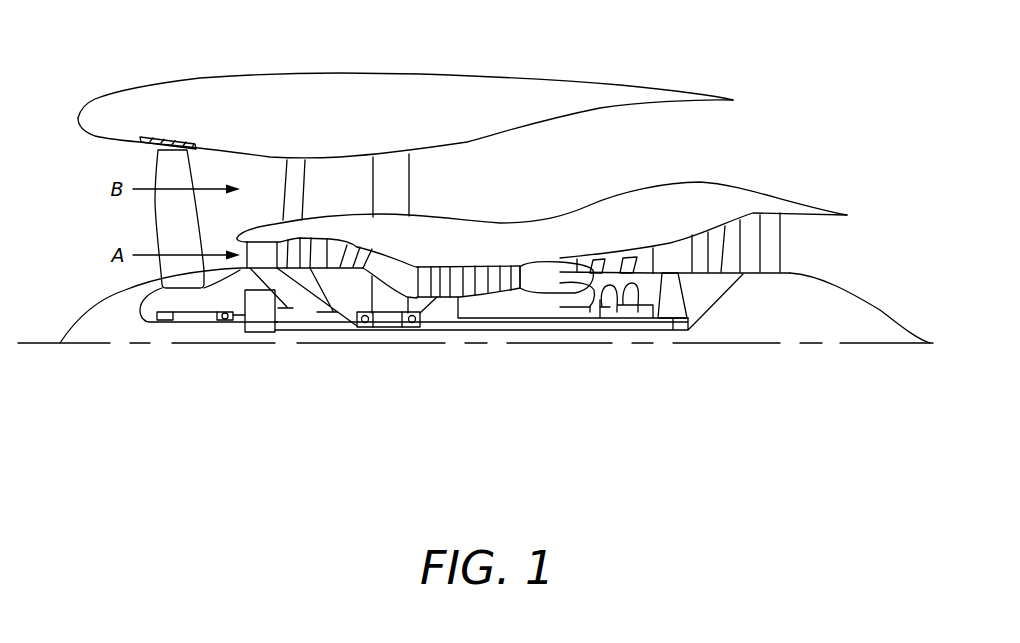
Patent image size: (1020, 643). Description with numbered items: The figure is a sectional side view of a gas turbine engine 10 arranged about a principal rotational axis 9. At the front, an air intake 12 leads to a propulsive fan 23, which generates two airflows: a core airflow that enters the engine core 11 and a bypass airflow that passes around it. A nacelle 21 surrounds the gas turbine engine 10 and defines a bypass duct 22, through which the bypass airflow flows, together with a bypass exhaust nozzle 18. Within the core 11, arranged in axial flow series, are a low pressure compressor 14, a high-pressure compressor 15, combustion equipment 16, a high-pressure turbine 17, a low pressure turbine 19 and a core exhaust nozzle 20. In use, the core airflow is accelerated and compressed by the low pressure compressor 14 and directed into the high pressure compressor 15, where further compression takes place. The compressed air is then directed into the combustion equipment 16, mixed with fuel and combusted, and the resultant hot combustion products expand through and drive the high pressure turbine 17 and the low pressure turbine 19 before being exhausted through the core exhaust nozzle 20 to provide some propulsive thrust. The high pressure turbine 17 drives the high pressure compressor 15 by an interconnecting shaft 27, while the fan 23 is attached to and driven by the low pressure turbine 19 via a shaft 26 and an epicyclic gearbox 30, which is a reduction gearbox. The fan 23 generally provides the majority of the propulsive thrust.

The principal rotational axis 9 is at (634, 344).
The gas turbine engine 10 is at (157, 90).
The core 11 is at (520, 238).
The air intake 12 is at (108, 168).
The low pressure compressor 14 is at (328, 245).
The high-pressure compressor 15 is at (475, 282).
The combustion equipment 16 is at (547, 280).
The high-pressure turbine 17 is at (612, 263).
The bypass exhaust nozzle 18 is at (725, 140).
The low pressure turbine 19 is at (752, 233).
The core exhaust nozzle 20 is at (812, 245).
The nacelle 21 is at (387, 88).
The bypass duct 22 is at (678, 156).
The propulsive fan 23 is at (160, 222).
The shaft 26 is at (470, 334).
The interconnecting shaft 27 is at (507, 320).
The epicyclic gearbox 30 is at (257, 322).